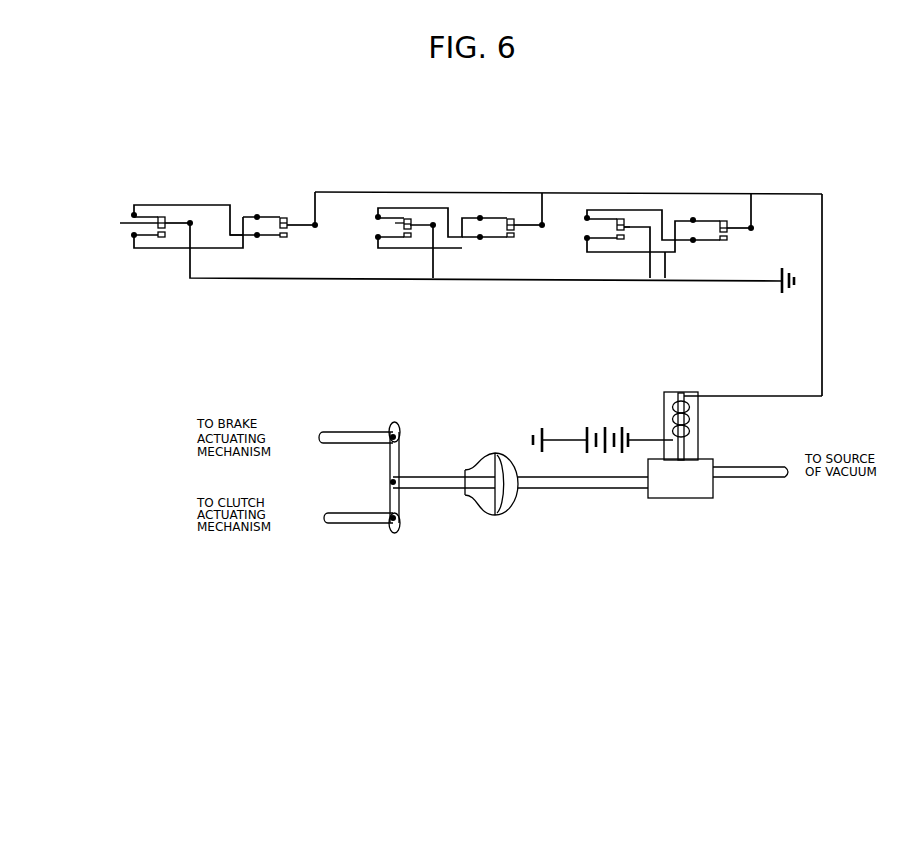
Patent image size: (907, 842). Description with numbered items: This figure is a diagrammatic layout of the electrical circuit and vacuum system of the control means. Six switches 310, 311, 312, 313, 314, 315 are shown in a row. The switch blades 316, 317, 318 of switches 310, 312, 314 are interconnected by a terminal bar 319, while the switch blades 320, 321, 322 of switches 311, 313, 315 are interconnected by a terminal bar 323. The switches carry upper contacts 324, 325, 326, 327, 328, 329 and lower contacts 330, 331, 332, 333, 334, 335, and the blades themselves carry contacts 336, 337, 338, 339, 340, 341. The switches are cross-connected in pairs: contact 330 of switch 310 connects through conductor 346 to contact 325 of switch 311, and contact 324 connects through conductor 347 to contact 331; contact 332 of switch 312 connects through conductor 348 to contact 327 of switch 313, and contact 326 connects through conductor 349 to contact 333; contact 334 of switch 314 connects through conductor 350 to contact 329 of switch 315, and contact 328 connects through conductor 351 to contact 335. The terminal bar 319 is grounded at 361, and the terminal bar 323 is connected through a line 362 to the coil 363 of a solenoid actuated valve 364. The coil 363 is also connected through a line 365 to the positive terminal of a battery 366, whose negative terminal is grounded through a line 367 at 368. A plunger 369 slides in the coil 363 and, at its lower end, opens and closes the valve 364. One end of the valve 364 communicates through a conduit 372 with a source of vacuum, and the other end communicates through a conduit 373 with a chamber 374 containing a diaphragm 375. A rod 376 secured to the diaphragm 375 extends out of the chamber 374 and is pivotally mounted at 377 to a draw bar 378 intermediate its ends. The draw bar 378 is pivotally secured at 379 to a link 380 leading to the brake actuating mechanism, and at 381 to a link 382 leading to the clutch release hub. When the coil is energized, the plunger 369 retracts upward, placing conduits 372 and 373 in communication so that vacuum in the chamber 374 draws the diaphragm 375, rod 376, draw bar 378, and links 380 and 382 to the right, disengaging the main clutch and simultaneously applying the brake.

The switch 310 is at (125, 204).
The switch 311 is at (258, 201).
The switch 312 is at (383, 201).
The switch 313 is at (528, 202).
The switch 314 is at (616, 203).
The switch 315 is at (726, 203).
The switch blade 316 is at (177, 221).
The switch blade 317 is at (418, 224).
The switch blade 318 is at (636, 226).
The terminal bar 319 is at (310, 281).
The switch blade 320 is at (304, 215).
The switch blade 321 is at (533, 222).
The switch blade 322 is at (738, 222).
The terminal bar 323 is at (318, 192).
The upper contact 324 is at (160, 216).
The upper contact 325 is at (282, 217).
The upper contact 326 is at (405, 218).
The upper contact 327 is at (512, 218).
The upper contact 328 is at (619, 218).
The upper contact 329 is at (723, 220).
The lower contact 330 is at (162, 238).
The lower contact 331 is at (288, 237).
The lower contact 332 is at (405, 238).
The lower contact 333 is at (507, 238).
The lower contact 334 is at (617, 239).
The lower contact 335 is at (728, 239).
The blade contact 336 is at (120, 223).
The blade contact 337 is at (282, 231).
The blade contact 338 is at (403, 223).
The blade contact 339 is at (515, 231).
The blade contact 340 is at (625, 233).
The blade contact 341 is at (721, 233).
The conductor 346 is at (133, 248).
The conductor 347 is at (214, 205).
The conductor 348 is at (422, 250).
The conductor 349 is at (450, 210).
The conductor 350 is at (665, 281).
The conductor 351 is at (665, 212).
The ground connection 361 is at (797, 279).
The line 362 is at (822, 323).
The coil 363 is at (689, 410).
The solenoid actuated valve 364 is at (735, 405).
The line 365 is at (632, 434).
The battery 366 is at (583, 404).
The line 367 is at (550, 436).
The ground connection 368 is at (527, 438).
The plunger 369 is at (684, 448).
The conduit 372 is at (760, 471).
The conduit 373 is at (588, 483).
The chamber 374 is at (514, 500).
The diaphragm 375 is at (500, 472).
The rod 376 is at (443, 484).
The pivot 377 is at (390, 481).
The draw bar 378 is at (394, 476).
The pivot 379 is at (394, 430).
The link 380 is at (342, 431).
The pivot 381 is at (399, 528).
The link 382 is at (345, 518).